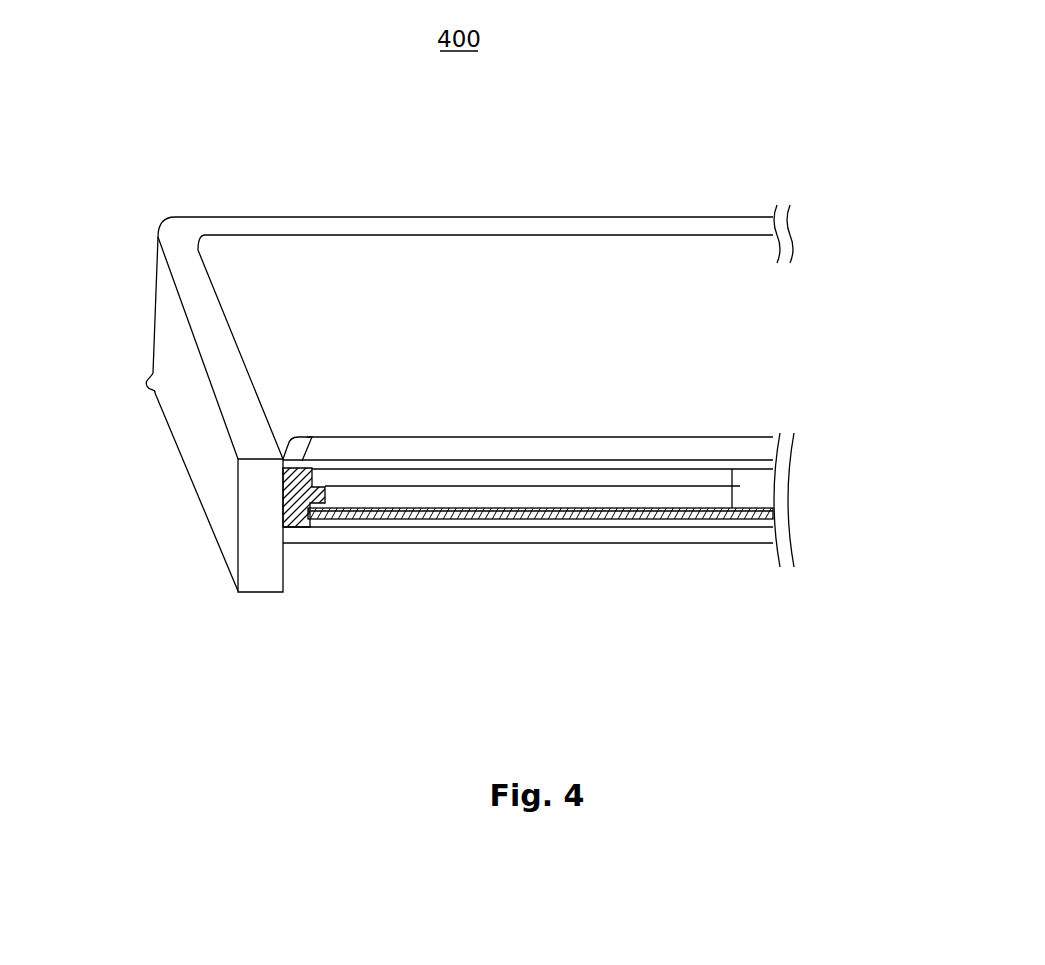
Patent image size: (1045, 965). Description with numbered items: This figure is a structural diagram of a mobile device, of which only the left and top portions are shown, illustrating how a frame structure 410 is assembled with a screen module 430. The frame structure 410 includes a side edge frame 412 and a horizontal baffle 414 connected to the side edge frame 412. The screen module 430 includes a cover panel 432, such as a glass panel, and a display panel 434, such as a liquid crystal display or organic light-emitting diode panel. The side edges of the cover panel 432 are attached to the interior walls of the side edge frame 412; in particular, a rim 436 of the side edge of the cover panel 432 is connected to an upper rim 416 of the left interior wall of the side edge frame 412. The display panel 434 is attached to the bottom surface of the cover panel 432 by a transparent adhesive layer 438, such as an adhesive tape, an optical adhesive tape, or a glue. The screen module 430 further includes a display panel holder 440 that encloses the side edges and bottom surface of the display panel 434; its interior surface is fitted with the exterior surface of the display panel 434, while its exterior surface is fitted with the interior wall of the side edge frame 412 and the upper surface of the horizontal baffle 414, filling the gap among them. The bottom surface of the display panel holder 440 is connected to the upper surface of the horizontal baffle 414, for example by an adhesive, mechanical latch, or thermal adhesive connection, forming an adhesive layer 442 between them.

The frame structure 410 is at (270, 577).
The side edge frame 412 is at (178, 363).
The horizontal baffle 414 is at (588, 533).
The upper rim of the left interior wall 416 is at (245, 397).
The screen module 430 is at (565, 292).
The cover panel 432 is at (722, 450).
The display panel 434 is at (735, 487).
The rim of the side edge of the cover panel 436 is at (240, 326).
The transparent adhesive layer 438 is at (614, 468).
The display panel holder 440 is at (303, 437).
The adhesive layer 442 is at (363, 522).